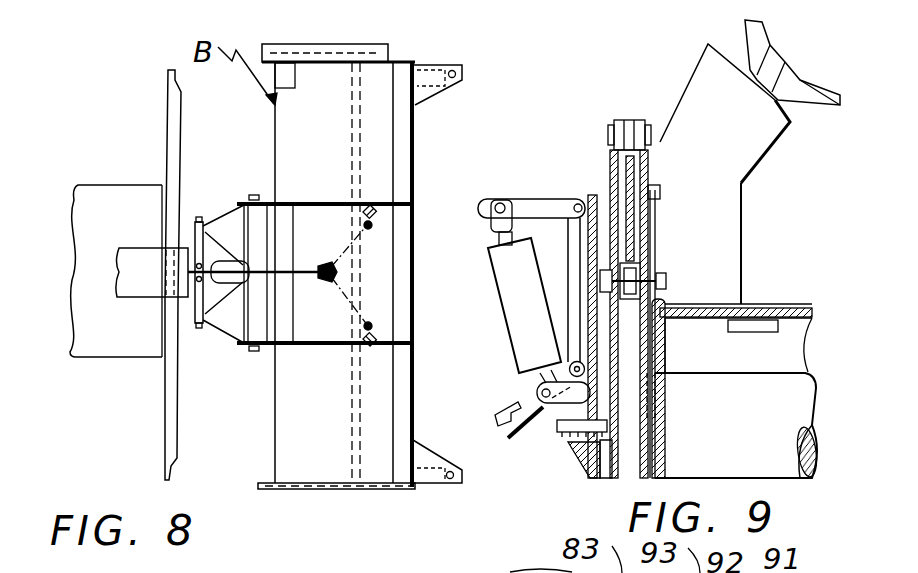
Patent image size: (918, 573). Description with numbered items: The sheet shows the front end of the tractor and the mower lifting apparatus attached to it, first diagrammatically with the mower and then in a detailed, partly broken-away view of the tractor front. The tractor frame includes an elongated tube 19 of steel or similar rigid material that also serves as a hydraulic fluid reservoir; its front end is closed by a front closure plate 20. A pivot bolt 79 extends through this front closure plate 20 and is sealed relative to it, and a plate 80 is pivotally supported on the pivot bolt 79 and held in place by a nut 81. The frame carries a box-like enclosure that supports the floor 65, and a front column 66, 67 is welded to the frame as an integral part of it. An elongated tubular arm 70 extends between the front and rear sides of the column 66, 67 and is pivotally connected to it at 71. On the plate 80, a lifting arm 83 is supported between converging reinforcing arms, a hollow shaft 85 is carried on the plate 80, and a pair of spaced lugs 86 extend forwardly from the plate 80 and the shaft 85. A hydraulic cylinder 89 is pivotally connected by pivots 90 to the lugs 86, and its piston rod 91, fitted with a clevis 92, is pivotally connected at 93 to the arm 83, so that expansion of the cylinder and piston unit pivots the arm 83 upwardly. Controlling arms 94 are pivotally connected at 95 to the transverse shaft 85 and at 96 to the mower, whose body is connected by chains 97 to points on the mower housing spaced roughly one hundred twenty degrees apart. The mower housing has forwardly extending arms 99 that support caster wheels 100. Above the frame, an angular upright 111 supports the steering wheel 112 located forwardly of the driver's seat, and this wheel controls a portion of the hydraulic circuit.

In FIG. 8, the elongated tubular arm 70 is at (178, 117).
In FIG. 8, the hollow shaft 85 is at (193, 305).
In FIG. 8, the lifting arm 83 is at (329, 269).
In FIG. 9, the lifting arm 83 is at (486, 204).
In FIG. 8, the controlling arms 94 is at (246, 352).
In FIG. 9, the controlling arms 94 is at (520, 406).
In FIG. 8, the pivotal connection 95 is at (212, 326).
In FIG. 9, the pivotal connection 95 is at (658, 346).
In FIG. 8, the pivotal connection 96 is at (252, 352).
In FIG. 8, the chains 97 is at (345, 298).
In FIG. 8, the forwardly extending arms 99 is at (438, 65).
In FIG. 8, the caster wheels 100 is at (425, 90).
In FIG. 9, the clevis 92 is at (528, 206).
In FIG. 9, the pivotal connection 93 is at (500, 199).
In FIG. 9, the piston rod 91 is at (505, 245).
In FIG. 9, the hydraulic cylinder 89 is at (523, 327).
In FIG. 9, the pivots 90 is at (538, 393).
In FIG. 9, the spaced lugs 86 is at (565, 406).
In FIG. 9, the plate 80 is at (598, 240).
In FIG. 9, the front column 67 is at (613, 165).
In FIG. 9, the front column 66 is at (648, 234).
In FIG. 9, the pivotal connection 71 is at (664, 280).
In FIG. 9, the floor 65 is at (772, 312).
In FIG. 9, the elongated tube 19 is at (770, 433).
In FIG. 9, the nut 81 is at (583, 452).
In FIG. 9, the pivot bolt 79 is at (608, 433).
In FIG. 9, the front closure plate 20 is at (608, 460).
In FIG. 9, the angular upright 111 is at (702, 88).
In FIG. 9, the steering wheel 112 is at (780, 64).